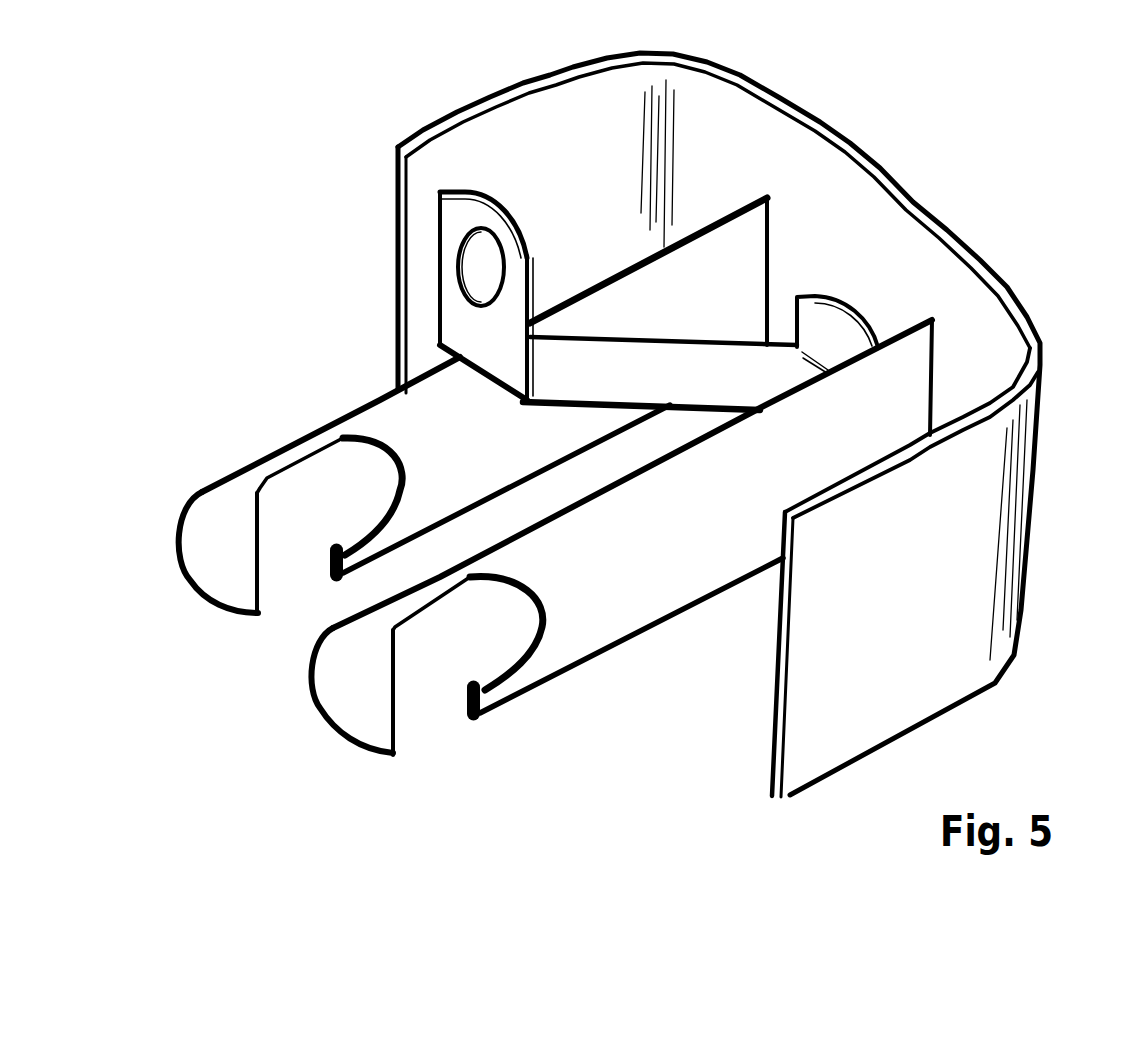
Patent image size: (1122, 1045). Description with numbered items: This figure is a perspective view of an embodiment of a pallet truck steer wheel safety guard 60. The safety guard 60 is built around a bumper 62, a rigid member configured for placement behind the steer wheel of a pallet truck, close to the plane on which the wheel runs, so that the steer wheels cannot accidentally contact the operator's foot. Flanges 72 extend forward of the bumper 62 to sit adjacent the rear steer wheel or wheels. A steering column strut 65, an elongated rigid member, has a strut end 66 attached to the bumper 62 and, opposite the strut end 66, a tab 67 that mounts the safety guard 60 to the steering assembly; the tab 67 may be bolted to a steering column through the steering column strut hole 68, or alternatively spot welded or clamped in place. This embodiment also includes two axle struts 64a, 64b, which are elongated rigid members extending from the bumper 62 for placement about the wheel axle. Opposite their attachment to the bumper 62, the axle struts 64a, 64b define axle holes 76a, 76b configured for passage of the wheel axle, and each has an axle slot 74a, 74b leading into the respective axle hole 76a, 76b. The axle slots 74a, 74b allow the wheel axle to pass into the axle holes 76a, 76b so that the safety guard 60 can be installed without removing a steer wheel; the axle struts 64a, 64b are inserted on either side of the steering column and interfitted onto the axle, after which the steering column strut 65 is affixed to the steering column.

The safety guard 60 is at (895, 100).
The bumper 62 is at (741, 424).
The axle strut 64a is at (632, 516).
The axle strut 64b is at (481, 445).
The steering column strut 65 is at (663, 279).
The strut end 66 is at (837, 295).
The tab 67 is at (408, 296).
The steering column strut hole 68 is at (400, 233).
The flange 72 is at (618, 418).
The axle slot 74a is at (394, 707).
The axle slot 74b is at (261, 572).
The axle hole 76a is at (562, 653).
The axle hole 76b is at (310, 472).